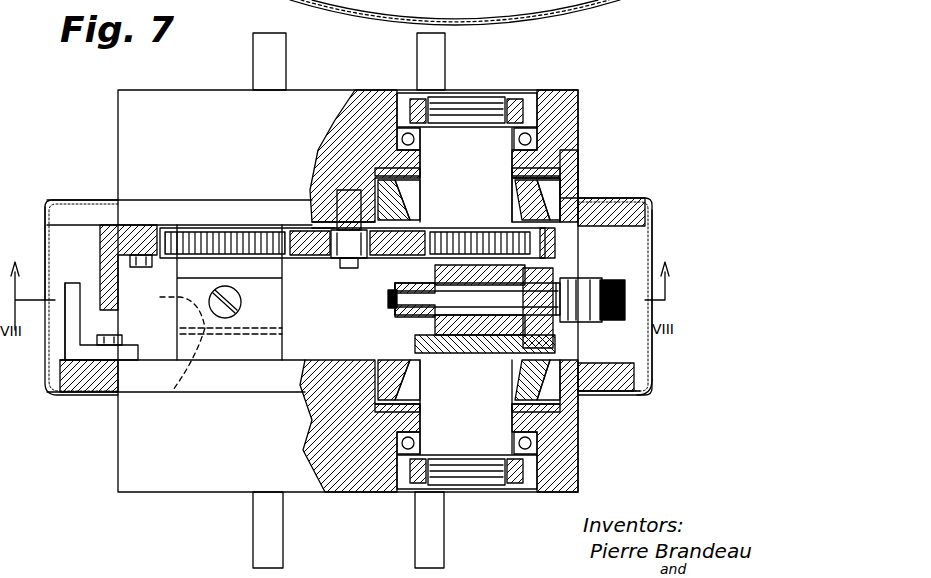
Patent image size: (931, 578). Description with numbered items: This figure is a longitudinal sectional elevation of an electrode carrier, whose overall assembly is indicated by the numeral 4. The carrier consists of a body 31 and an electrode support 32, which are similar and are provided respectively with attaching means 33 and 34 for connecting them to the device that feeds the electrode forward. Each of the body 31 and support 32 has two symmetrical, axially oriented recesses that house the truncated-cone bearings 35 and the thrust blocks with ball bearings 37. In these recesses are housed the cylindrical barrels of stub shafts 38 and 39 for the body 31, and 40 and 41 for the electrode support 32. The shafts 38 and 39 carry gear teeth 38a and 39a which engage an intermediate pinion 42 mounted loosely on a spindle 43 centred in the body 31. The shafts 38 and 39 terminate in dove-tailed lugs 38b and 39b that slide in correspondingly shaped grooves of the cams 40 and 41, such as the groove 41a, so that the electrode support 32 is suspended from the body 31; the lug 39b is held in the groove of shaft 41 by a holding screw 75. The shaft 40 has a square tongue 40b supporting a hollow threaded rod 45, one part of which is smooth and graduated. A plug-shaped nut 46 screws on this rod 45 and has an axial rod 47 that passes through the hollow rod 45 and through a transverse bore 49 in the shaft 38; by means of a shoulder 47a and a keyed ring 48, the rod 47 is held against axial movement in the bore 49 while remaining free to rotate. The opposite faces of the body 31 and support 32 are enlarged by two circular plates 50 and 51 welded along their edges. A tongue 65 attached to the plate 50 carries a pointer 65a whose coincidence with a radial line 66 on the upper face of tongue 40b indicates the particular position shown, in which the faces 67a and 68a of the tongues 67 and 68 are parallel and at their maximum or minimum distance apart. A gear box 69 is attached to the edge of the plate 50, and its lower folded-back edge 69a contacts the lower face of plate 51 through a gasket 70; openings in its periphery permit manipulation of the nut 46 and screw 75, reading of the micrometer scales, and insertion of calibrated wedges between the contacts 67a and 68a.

The housing 4 is at (497, 112).
The body 31 is at (557, 130).
The electrode support 32 is at (578, 480).
The attaching means 33 is at (262, 52).
The attaching means 34 is at (428, 534).
The bearings 35 is at (345, 175).
The thrust blocks with ball bearings 37 is at (388, 127).
The stub shaft 38 is at (452, 147).
The gear teeth 38a is at (407, 252).
The dove-tailed shoulder or lug 38b is at (542, 252).
The stub shaft 39 is at (213, 262).
The gear teeth 39a is at (333, 255).
The dove-tailed shoulder or lug 39b is at (166, 308).
The stub shaft 40 is at (480, 497).
The square shaped tongue 40b is at (560, 320).
The stub shaft 41 is at (240, 346).
The dove-tailed groove 41a is at (176, 375).
The intermediate pinion 42 is at (380, 258).
The shaft or spindle 43 is at (347, 254).
The hollow threaded rod 45 is at (573, 287).
The nut 46 is at (622, 323).
The axial rod 47 is at (442, 355).
The shoulder 47a is at (492, 250).
The keyed ring 48 is at (398, 320).
The transverse bore 49 is at (458, 272).
The circular plate 50 is at (634, 196).
The circular plate 51 is at (640, 396).
The tongue 65 is at (598, 196).
The pointer 65a is at (520, 192).
The radial line 66 is at (503, 363).
The tongue 67 is at (107, 198).
The face 67a is at (55, 198).
The tongue 68 is at (102, 395).
The face 68a is at (78, 320).
The gear box 69 is at (650, 358).
The lower folded back edge 69a is at (607, 400).
The gasket 70 is at (615, 367).
The holding screw 75 is at (240, 307).